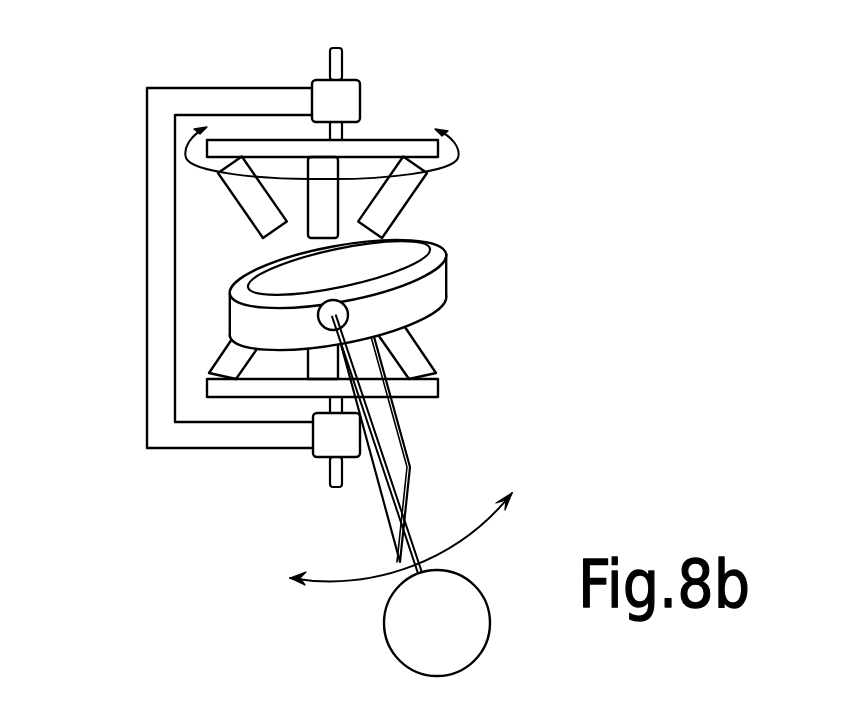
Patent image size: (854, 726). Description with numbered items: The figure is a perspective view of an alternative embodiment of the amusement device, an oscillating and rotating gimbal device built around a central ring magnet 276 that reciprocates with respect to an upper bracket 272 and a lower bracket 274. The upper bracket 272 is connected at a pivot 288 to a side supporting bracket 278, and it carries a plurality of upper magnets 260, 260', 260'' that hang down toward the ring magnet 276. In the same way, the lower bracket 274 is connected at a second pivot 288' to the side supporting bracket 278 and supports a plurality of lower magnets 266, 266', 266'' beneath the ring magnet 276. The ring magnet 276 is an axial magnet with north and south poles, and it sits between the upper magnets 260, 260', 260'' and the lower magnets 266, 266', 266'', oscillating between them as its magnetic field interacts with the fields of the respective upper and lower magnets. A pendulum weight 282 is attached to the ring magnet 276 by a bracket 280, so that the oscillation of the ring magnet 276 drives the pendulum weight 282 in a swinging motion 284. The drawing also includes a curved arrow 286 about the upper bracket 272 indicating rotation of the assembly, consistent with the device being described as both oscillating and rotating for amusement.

The upper magnet 260 is at (426, 198).
The upper magnet 260' is at (366, 167).
The upper magnet 260'' is at (233, 215).
The lower magnet 266 is at (434, 342).
The lower magnet 266' is at (275, 406).
The lower magnet 266'' is at (218, 397).
The upper bracket 272 is at (428, 150).
The lower bracket 274 is at (432, 388).
The ring magnet 276 is at (433, 282).
The side supporting bracket 278 is at (147, 300).
The bracket 280 is at (408, 456).
The pendulum weight 282 is at (421, 632).
The swinging motion 284 is at (493, 512).
The rotation direction arrow 286 is at (462, 147).
The pivot 288 is at (294, 94).
The pivot 288' is at (318, 461).